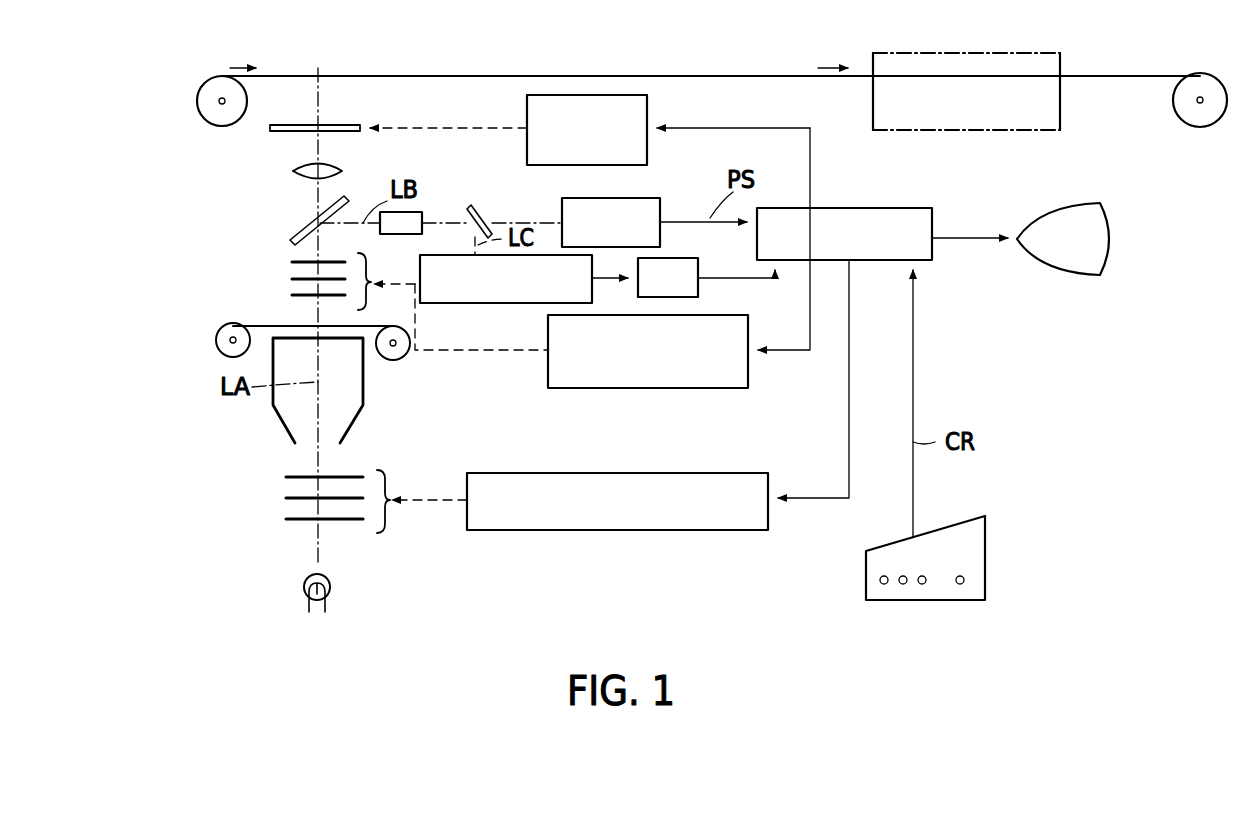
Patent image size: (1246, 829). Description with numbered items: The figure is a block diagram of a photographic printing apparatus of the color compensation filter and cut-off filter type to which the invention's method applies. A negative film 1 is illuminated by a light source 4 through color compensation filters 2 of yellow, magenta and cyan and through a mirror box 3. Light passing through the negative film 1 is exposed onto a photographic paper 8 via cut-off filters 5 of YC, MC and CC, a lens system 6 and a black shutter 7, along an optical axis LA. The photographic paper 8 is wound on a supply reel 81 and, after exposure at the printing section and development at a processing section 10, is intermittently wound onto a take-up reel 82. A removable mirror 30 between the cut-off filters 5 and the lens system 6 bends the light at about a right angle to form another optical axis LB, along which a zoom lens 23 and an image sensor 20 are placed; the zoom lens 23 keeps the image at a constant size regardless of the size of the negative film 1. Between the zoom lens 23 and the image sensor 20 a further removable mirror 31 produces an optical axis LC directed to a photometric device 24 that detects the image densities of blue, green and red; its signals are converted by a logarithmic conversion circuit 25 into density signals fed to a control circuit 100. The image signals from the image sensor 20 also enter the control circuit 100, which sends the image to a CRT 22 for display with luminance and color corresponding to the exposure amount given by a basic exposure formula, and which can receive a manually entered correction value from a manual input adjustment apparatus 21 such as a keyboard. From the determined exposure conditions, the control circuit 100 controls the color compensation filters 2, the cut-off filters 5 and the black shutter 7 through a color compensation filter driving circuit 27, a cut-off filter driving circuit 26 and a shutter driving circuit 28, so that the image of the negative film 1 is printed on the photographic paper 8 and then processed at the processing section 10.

The negative film 1 is at (253, 326).
The color compensation filters 2 is at (363, 473).
The mirror box 3 is at (364, 392).
The light source 4 is at (333, 586).
The cut-off filters 5 is at (263, 247).
The lens system 6 is at (338, 168).
The black shutter 7 is at (352, 122).
The photographic paper 8 is at (480, 75).
The processing section 10 is at (1043, 132).
The image sensor 20 is at (627, 198).
The manual input adjustment apparatus 21 is at (987, 565).
The CRT 22 is at (1085, 275).
The zoom lens 23 is at (422, 212).
The photometric device 24 is at (479, 305).
The logarithmic conversion circuit 25 is at (677, 258).
The cut-off filter driving circuit 26 is at (727, 388).
The color compensation filter driving circuit 27 is at (558, 472).
The shutter driving circuit 28 is at (647, 113).
The mirror 30 is at (310, 226).
The mirror 31 is at (482, 212).
The supply reel 81 is at (198, 110).
The take-up reel 82 is at (1201, 128).
The control circuit 100 is at (848, 205).